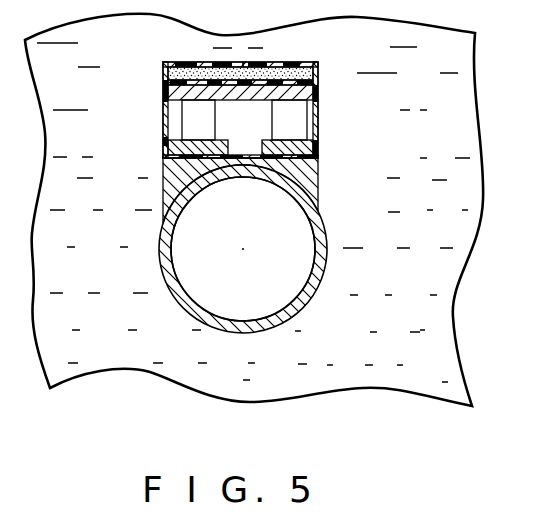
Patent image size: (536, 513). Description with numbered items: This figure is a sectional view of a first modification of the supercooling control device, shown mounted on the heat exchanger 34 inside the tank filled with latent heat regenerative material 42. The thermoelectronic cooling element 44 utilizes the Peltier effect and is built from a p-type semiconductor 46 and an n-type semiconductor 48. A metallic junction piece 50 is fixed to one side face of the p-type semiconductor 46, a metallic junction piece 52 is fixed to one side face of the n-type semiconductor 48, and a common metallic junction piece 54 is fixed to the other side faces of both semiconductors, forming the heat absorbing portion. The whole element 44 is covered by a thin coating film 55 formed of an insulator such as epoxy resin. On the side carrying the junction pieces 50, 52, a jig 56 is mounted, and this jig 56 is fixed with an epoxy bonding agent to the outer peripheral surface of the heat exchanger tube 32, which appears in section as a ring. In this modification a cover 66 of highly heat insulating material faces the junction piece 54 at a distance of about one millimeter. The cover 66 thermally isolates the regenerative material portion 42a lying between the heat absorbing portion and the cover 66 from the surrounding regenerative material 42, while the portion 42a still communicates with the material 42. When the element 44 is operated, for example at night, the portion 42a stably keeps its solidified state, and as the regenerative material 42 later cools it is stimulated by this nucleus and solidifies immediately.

The latent heat regenerative material 42 is at (450, 260).
The regenerative material portion 42a is at (180, 64).
The cover 66 is at (298, 65).
The coating film 55 is at (315, 74).
The metallic junction piece 54 is at (182, 92).
The p-type semiconductor 46 is at (190, 104).
The n-type semiconductor 48 is at (305, 108).
The metallic junction piece 50 is at (182, 147).
The metallic junction piece 52 is at (308, 153).
The thermoelectronic cooling element 44 is at (326, 147).
The jig 56 is at (314, 192).
The heat exchanger tube 32 is at (307, 295).
The heat exchanger 34 is at (178, 318).